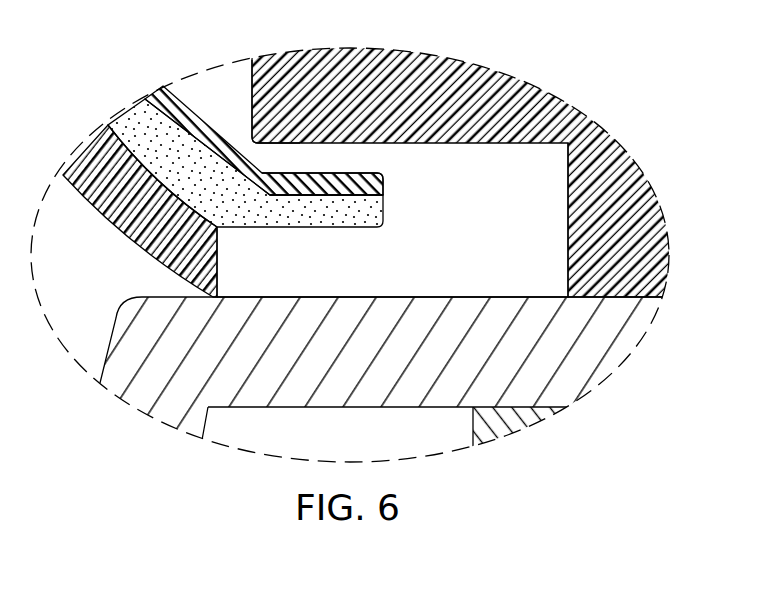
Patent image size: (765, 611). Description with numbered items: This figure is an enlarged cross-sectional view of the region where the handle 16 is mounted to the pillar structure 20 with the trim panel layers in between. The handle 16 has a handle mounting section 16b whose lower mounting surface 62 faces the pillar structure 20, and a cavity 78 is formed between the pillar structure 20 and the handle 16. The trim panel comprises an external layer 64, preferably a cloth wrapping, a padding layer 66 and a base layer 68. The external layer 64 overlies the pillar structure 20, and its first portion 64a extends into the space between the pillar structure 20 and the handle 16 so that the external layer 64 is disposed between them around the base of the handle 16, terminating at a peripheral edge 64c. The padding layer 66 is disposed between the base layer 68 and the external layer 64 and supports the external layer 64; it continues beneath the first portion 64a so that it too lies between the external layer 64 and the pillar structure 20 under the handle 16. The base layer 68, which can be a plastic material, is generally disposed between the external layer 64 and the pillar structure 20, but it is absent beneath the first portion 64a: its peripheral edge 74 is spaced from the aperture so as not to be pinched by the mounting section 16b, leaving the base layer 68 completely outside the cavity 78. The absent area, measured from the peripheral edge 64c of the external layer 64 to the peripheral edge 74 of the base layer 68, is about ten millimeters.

The handle 16 is at (637, 220).
The handle mounting section 16b is at (274, 102).
The pillar structure 20 is at (560, 355).
The lower mounting surface 62 is at (620, 300).
The external layer 64 is at (284, 134).
The first portion of the external layer 64a is at (364, 187).
The peripheral edge of the external layer 64c is at (383, 188).
The padding layer 66 is at (383, 211).
The base layer 68 is at (218, 267).
The peripheral edge of the base layer 74 is at (218, 252).
The cavity 78 is at (508, 252).